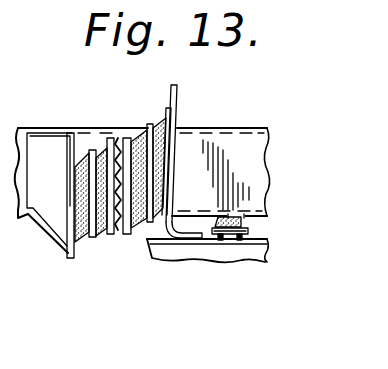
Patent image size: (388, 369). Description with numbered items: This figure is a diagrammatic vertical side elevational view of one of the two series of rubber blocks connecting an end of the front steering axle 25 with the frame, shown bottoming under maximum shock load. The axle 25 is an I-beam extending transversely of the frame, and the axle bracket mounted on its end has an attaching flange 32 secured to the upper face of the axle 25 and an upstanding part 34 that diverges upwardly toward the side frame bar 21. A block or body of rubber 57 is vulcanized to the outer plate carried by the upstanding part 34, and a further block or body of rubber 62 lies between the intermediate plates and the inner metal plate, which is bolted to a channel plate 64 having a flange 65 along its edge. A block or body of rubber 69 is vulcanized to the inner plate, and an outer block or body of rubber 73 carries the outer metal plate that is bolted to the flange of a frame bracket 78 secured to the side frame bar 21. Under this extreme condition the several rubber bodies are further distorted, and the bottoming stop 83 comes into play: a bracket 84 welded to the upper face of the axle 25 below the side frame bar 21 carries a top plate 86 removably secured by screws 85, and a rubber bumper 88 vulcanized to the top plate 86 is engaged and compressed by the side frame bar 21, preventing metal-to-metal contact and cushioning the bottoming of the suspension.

The longitudinal side frame bar 21 is at (258, 128).
The steering axle 25 is at (268, 253).
The attaching flange 32 is at (183, 235).
The upstanding part of axle bracket 34 is at (178, 100).
The block or body of rubber 57 is at (168, 108).
The block or body of rubber 62 is at (149, 124).
The channel plate 64 is at (120, 237).
The flange of channel plate 65 is at (112, 237).
The block or body of rubber 69 is at (100, 160).
The outer block or body of rubber 73 is at (76, 259).
The frame bracket 78 is at (53, 131).
The bottoming stop 83 is at (249, 224).
The bracket 84 is at (227, 241).
The screws 85 is at (240, 241).
The top plate 86 is at (250, 231).
The rubber bumper 88 is at (237, 211).